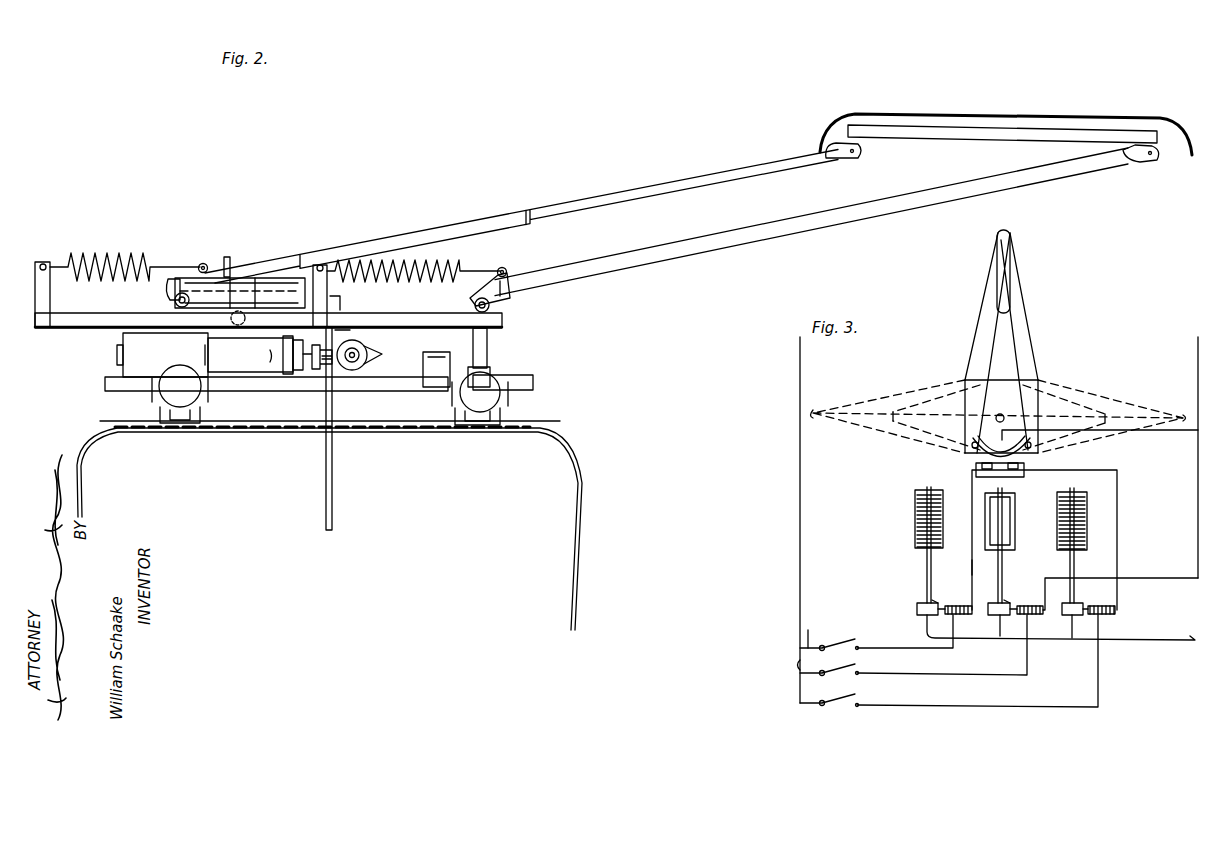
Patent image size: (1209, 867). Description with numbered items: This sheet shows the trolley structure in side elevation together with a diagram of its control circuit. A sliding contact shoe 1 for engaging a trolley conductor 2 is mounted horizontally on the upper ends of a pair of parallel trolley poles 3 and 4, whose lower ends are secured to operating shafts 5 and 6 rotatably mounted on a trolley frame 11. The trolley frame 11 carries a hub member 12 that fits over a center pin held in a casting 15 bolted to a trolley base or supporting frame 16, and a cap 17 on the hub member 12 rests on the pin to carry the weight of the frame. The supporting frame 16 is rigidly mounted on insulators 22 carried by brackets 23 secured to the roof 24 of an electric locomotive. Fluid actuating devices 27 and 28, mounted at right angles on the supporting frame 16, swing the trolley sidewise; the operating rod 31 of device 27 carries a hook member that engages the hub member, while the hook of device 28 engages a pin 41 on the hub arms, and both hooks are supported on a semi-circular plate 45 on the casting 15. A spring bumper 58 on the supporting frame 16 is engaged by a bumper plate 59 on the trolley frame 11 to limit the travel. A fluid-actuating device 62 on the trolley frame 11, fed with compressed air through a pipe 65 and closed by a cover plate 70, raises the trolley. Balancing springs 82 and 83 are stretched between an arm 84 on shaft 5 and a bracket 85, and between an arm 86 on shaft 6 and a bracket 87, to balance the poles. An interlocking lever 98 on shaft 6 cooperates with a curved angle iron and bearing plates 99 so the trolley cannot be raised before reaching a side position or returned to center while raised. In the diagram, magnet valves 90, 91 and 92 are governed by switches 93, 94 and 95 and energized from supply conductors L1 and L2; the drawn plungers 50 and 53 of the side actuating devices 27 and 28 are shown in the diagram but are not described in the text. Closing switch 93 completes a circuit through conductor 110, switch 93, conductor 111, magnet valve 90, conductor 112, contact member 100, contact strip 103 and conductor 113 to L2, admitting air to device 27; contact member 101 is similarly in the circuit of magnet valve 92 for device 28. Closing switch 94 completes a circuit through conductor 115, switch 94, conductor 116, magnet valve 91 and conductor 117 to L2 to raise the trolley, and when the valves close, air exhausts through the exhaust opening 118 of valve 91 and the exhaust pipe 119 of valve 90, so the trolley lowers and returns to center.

In FIG. 2, the sliding contact shoe 1 is at (1055, 122).
In FIG. 3, the sliding contact shoe 1 is at (1010, 246).
In FIG. 2, the trolley conductor 2 is at (1000, 122).
In FIG. 2, the trolley pole 3 is at (713, 178).
In FIG. 3, the trolley pole 3 is at (986, 342).
In FIG. 2, the trolley pole 4 is at (735, 233).
In FIG. 3, the trolley pole 4 is at (983, 294).
In FIG. 2, the operating shaft 5 is at (174, 300).
In FIG. 2, the operating shaft 6 is at (492, 305).
In FIG. 2, the trolley frame 11 is at (503, 325).
In FIG. 2, the hub member 12 is at (343, 331).
In FIG. 2, the casting 15 is at (346, 396).
In FIG. 2, the trolley base or supporting frame 16 is at (105, 383).
In FIG. 2, the cap 17 is at (338, 311).
In FIG. 2, the insulator 22 is at (170, 395).
In FIG. 2, the bracket 23 is at (200, 416).
In FIG. 2, the roof 24 is at (583, 470).
In FIG. 2, the fluid actuating device 27 is at (160, 365).
In FIG. 3, the fluid actuating device 27 is at (915, 529).
In FIG. 2, the fluid actuating device 28 is at (369, 357).
In FIG. 3, the fluid actuating device 28 is at (1087, 532).
In FIG. 2, the operating rod 31 is at (314, 346).
In FIG. 2, the pin 41 is at (275, 352).
In FIG. 2, the semi-circular plate 45 is at (324, 400).
In FIG. 3, the plunger 50 is at (926, 571).
In FIG. 3, the plunger 53 is at (1070, 569).
In FIG. 2, the spring bumper 58 is at (455, 353).
In FIG. 2, the bumper plate 59 is at (490, 370).
In FIG. 2, the fluid-actuating device 62 is at (240, 276).
In FIG. 3, the fluid-actuating device 62 is at (1015, 532).
In FIG. 3, the pipe 65 is at (998, 577).
In FIG. 2, the cover plate 70 is at (226, 257).
In FIG. 2, the balancing spring 82 is at (112, 256).
In FIG. 2, the balancing spring 83 is at (466, 262).
In FIG. 2, the arm 84 is at (199, 264).
In FIG. 2, the bracket 85 is at (50, 297).
In FIG. 2, the arm 86 is at (507, 270).
In FIG. 2, the bracket 87 is at (318, 265).
In FIG. 3, the magnet valve 90 is at (917, 610).
In FIG. 3, the magnet valve 91 is at (992, 616).
In FIG. 3, the magnet valve 92 is at (1066, 617).
In FIG. 3, the switch 93 is at (838, 645).
In FIG. 3, the switch 94 is at (868, 676).
In FIG. 3, the switch 95 is at (868, 706).
In FIG. 2, the interlocking lever 98 is at (487, 340).
In FIG. 2, the bearing plate 99 is at (533, 380).
In FIG. 3, the contact member 100 is at (970, 450).
In FIG. 3, the contact member 101 is at (1035, 452).
In FIG. 3, the contact strip 103 is at (985, 437).
In FIG. 3, the conductor 110 is at (809, 632).
In FIG. 3, the conductor 111 is at (878, 650).
In FIG. 3, the conductor 112 is at (972, 567).
In FIG. 3, the conductor 113 is at (1058, 426).
In FIG. 3, the conductor 115 is at (798, 661).
In FIG. 3, the conductor 116 is at (946, 680).
In FIG. 3, the conductor 117 is at (1152, 581).
In FIG. 3, the exhaust opening 118 is at (1010, 603).
In FIG. 3, the exhaust pipe 119 is at (936, 603).
In FIG. 3, the supply conductor L1 is at (790, 520).
In FIG. 3, the supply conductor L2 is at (1189, 457).